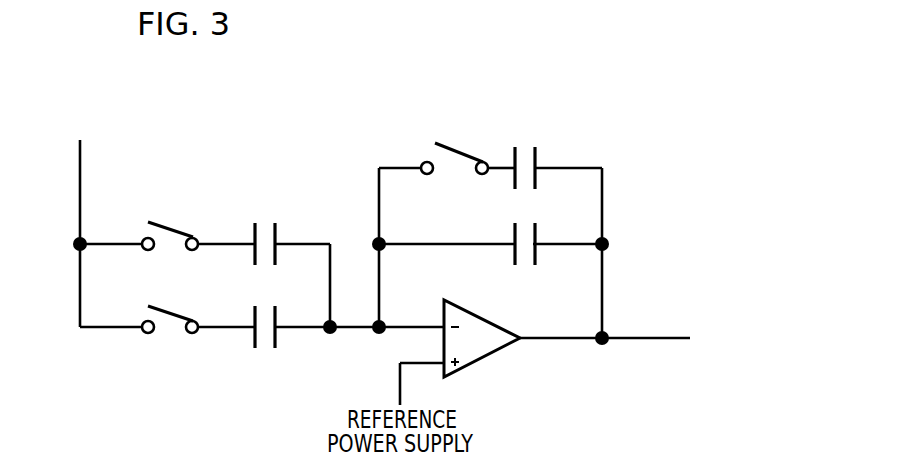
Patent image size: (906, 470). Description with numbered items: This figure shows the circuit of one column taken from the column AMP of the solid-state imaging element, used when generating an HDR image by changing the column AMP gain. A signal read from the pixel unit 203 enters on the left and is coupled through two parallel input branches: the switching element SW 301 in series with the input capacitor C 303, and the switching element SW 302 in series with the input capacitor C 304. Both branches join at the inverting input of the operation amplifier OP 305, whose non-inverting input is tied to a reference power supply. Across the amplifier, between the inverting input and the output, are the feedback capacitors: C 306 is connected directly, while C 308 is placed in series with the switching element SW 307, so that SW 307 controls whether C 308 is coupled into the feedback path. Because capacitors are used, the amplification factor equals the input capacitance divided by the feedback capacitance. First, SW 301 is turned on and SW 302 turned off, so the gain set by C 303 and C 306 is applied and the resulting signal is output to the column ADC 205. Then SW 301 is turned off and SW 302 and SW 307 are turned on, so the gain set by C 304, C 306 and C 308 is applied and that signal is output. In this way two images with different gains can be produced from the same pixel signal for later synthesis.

The pixel unit 203 is at (80, 125).
The column ADC 205 is at (729, 337).
The switching element SW 301 is at (202, 214).
The switching element SW 302 is at (202, 298).
The capacitive element C 303 is at (300, 214).
The capacitive element C 304 is at (300, 298).
The operation amplifier OP 305 is at (512, 305).
The capacitive element C 306 is at (560, 218).
The switching element SW 307 is at (483, 138).
The capacitive element C 308 is at (560, 138).